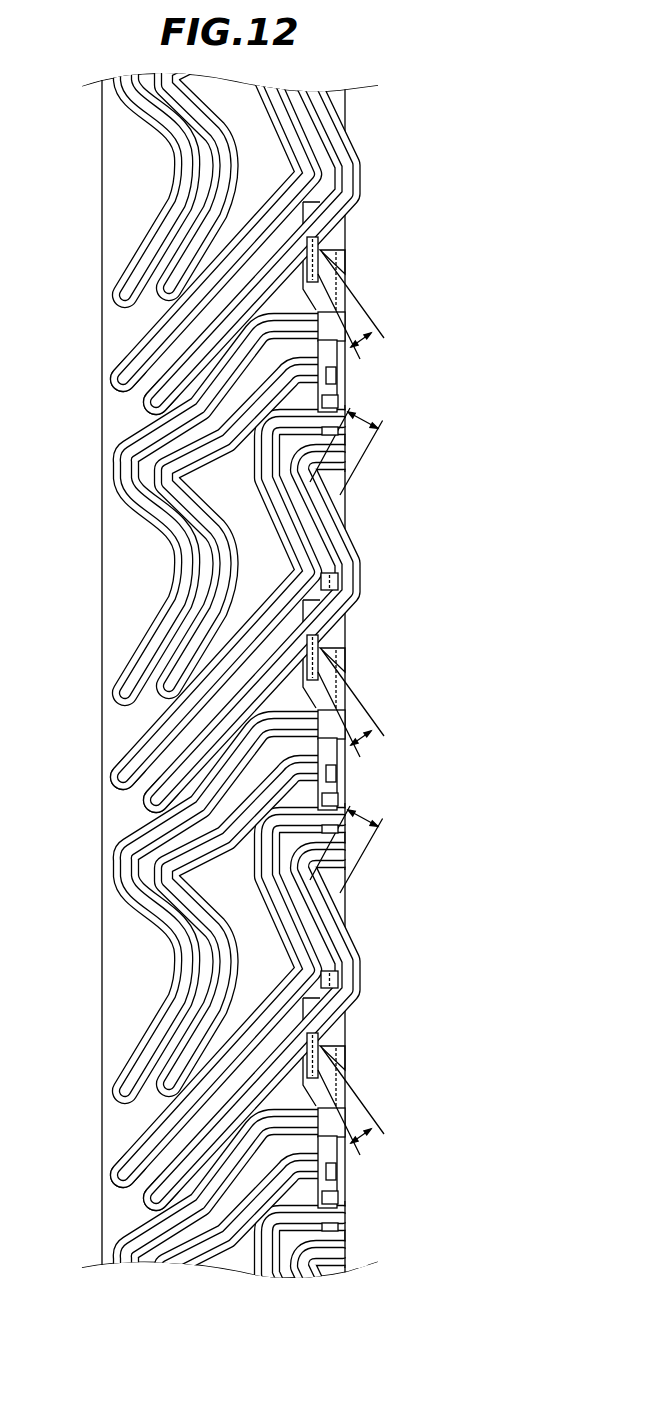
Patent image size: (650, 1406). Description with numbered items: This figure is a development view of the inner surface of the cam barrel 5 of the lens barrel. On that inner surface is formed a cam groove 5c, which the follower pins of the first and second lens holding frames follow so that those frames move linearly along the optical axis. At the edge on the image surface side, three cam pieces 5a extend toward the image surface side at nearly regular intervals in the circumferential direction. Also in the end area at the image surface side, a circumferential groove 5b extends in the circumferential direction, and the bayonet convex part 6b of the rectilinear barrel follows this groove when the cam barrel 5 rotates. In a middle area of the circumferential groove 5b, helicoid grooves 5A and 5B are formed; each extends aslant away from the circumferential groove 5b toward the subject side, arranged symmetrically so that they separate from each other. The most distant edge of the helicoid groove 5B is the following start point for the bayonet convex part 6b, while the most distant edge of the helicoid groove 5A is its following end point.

The cam barrel 5 is at (135, 589).
The cam piece 5a is at (361, 180).
The circumferential groove 5b is at (333, 1196).
The cam groove 5c is at (122, 1165).
The helicoid groove 5A is at (349, 646).
The helicoid groove 5B is at (355, 708).
The bayonet convex part 6b is at (313, 658).